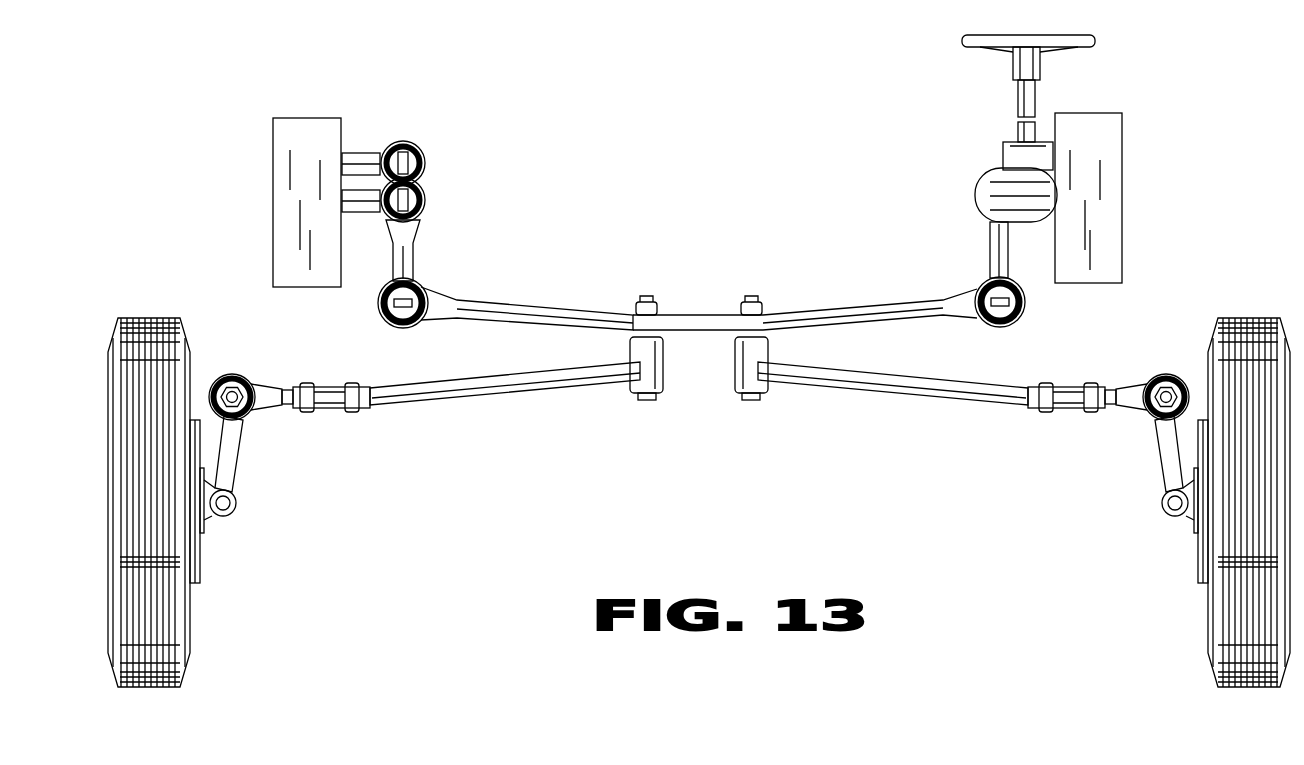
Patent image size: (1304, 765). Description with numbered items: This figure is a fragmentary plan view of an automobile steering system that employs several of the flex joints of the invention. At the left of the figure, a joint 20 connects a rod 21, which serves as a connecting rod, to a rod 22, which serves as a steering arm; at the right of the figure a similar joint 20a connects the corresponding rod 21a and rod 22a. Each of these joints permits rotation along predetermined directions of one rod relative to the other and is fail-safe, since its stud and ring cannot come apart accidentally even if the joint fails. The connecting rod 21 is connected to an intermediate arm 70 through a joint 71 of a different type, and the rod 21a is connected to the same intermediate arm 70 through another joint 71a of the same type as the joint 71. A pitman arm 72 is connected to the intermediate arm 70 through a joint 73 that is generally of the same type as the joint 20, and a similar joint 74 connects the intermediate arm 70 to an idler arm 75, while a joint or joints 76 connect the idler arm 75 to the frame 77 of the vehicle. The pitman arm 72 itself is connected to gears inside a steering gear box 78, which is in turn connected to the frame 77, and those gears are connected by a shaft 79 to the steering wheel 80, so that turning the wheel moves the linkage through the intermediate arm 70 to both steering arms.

The joint 20 is at (222, 374).
The joint 20a is at (1175, 373).
The rod 21 is at (380, 388).
The rod 21a is at (1018, 378).
The rod 22 is at (238, 444).
The rod 22a is at (1176, 462).
The intermediate arm 70 is at (812, 312).
The joint 71 is at (664, 384).
The joint 71a is at (758, 357).
The pitman arm 72 is at (990, 250).
The joint 73 is at (1026, 296).
The joint 74 is at (426, 285).
The idler arm 75 is at (409, 258).
The joint or joints 76 is at (424, 208).
The frame 77 is at (272, 208).
The steering gear box 78 is at (976, 192).
The shaft 79 is at (1017, 112).
The steering wheel 80 is at (990, 48).